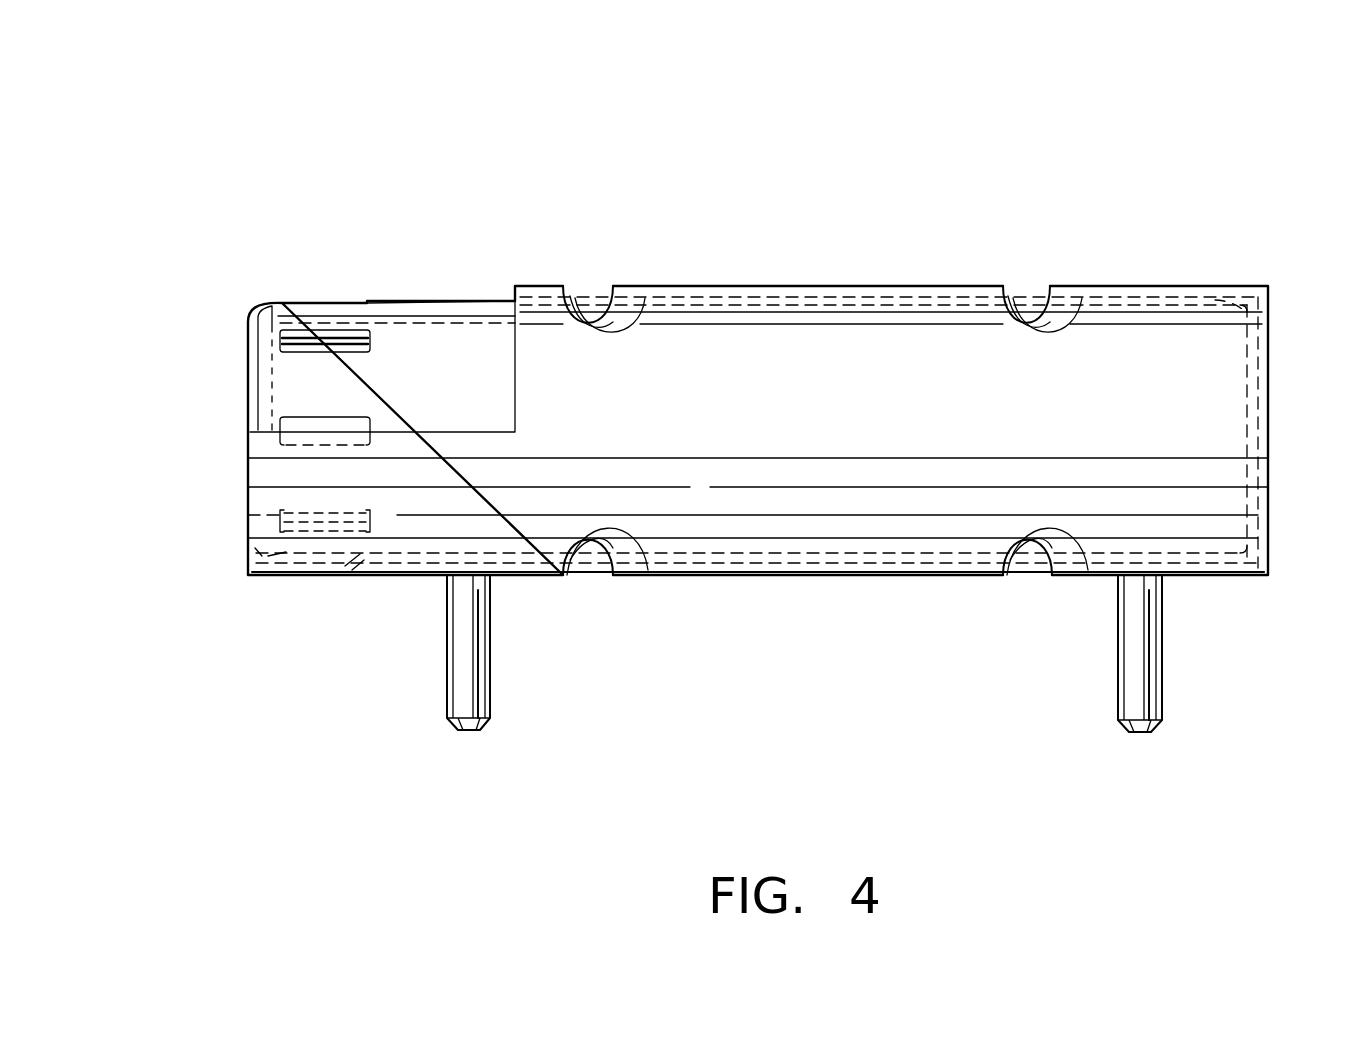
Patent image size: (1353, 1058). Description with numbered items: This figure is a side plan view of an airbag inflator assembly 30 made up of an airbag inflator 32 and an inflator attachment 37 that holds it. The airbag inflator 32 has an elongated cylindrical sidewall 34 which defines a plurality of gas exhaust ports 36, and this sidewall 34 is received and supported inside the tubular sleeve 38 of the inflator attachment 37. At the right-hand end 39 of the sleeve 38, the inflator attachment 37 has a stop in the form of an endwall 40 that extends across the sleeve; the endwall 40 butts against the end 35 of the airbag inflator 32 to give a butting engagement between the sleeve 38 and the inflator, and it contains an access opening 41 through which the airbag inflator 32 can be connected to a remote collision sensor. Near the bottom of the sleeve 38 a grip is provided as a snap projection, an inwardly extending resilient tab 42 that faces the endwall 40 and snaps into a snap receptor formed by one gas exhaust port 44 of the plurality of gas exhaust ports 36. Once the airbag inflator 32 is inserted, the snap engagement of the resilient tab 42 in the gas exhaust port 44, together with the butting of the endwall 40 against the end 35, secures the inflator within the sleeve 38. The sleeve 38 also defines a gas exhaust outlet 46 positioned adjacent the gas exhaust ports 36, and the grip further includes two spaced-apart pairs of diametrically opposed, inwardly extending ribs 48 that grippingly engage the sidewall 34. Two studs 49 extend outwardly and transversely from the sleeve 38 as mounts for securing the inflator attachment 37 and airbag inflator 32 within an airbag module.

The airbag inflator assembly 30 is at (834, 98).
The airbag inflator 32 is at (485, 288).
The elongated cylindrical sidewall 34 is at (440, 303).
The end of the airbag inflator 35 is at (1243, 355).
The gas exhaust ports 36 is at (372, 338).
The inflator attachment 37 is at (741, 276).
The tubular sleeve 38 is at (870, 287).
The end of the sleeve 39 is at (1237, 578).
The endwall 40 is at (1268, 350).
The access opening 41 is at (1270, 486).
The resilient tab 42 is at (343, 583).
The gas exhaust port 44 is at (270, 575).
The gas exhaust outlet 46 is at (250, 430).
The ribs 48 is at (615, 330).
The studs 49 is at (478, 672).